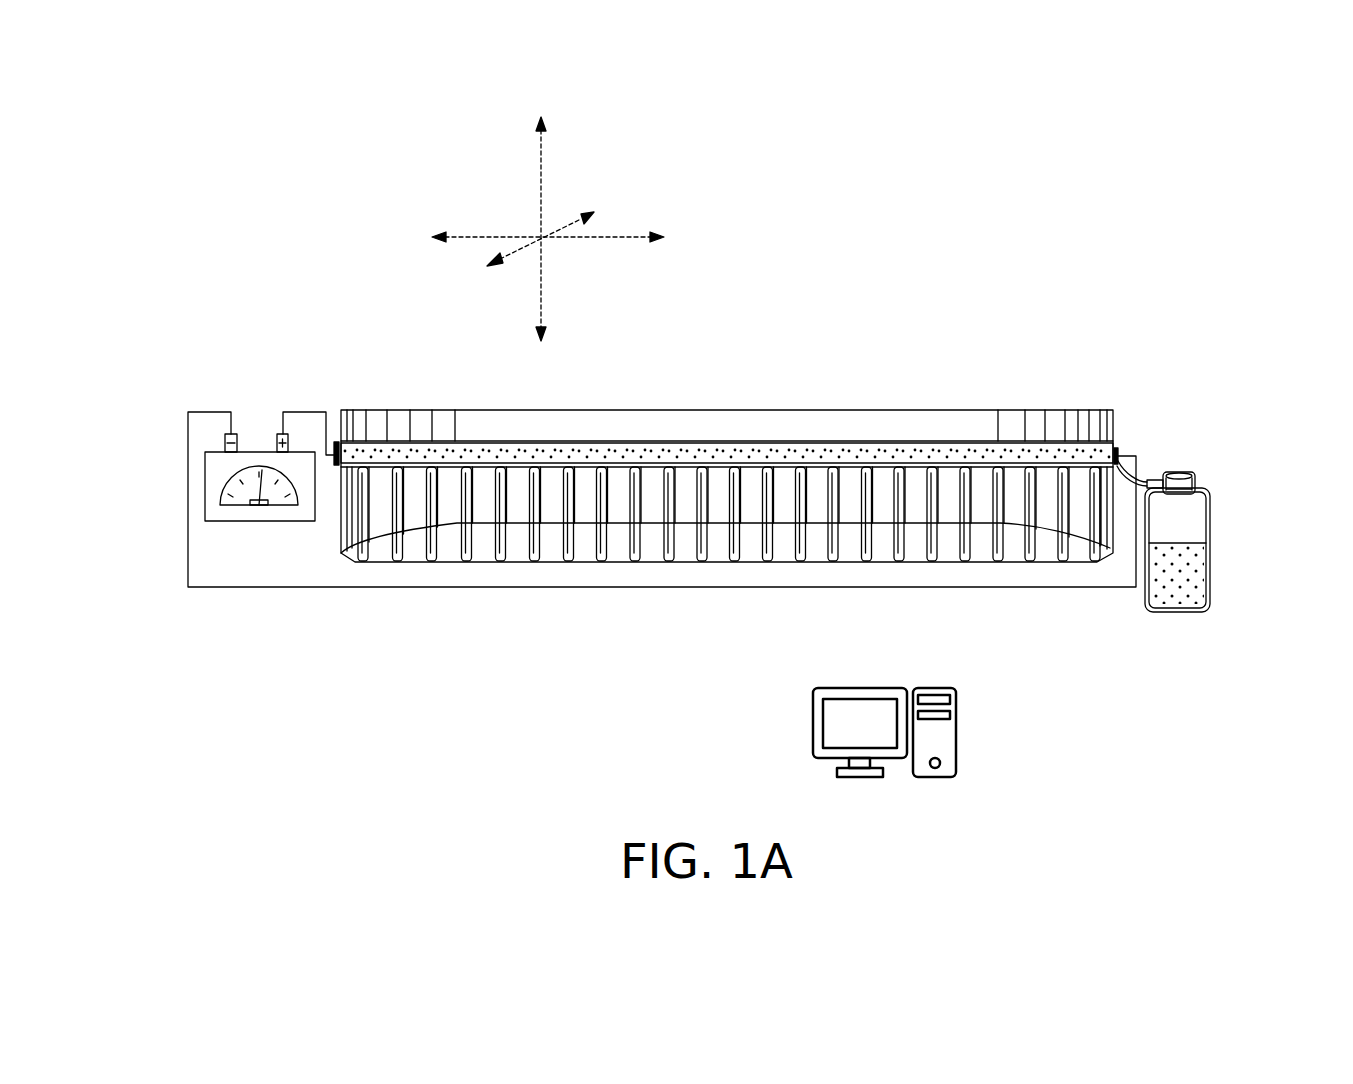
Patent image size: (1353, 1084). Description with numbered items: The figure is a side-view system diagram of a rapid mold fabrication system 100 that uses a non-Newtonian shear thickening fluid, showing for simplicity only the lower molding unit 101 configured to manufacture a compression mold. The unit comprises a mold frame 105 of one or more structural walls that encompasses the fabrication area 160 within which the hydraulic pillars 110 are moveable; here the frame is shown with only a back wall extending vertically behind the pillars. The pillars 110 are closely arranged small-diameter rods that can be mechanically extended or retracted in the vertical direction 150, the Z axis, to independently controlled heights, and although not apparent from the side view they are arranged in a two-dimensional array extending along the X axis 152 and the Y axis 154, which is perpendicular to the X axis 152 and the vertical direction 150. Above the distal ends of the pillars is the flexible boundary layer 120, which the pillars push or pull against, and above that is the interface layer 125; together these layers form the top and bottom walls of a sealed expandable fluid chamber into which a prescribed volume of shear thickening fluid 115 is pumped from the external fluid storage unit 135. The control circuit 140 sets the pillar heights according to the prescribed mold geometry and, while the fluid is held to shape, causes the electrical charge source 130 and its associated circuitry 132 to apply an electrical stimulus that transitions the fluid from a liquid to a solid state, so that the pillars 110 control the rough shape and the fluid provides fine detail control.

The rapid mold fabrication system 100 is at (1003, 226).
The lower molding unit 101 is at (1046, 369).
The mold frame 105 is at (368, 420).
The hydraulic pillars 110 is at (568, 547).
The shear thickening fluid 115 is at (690, 458).
The boundary layer 120 is at (837, 468).
The interface layer 125 is at (1082, 445).
The electrical charge source 130 is at (205, 487).
The associated circuitry 132 is at (328, 447).
The fluid storage unit 135 is at (1212, 518).
The control circuit 140 is at (991, 692).
The vertical direction 150 is at (540, 168).
The X axis 152 is at (613, 238).
The Y axis 154 is at (518, 252).
The fabrication area 160 is at (716, 419).